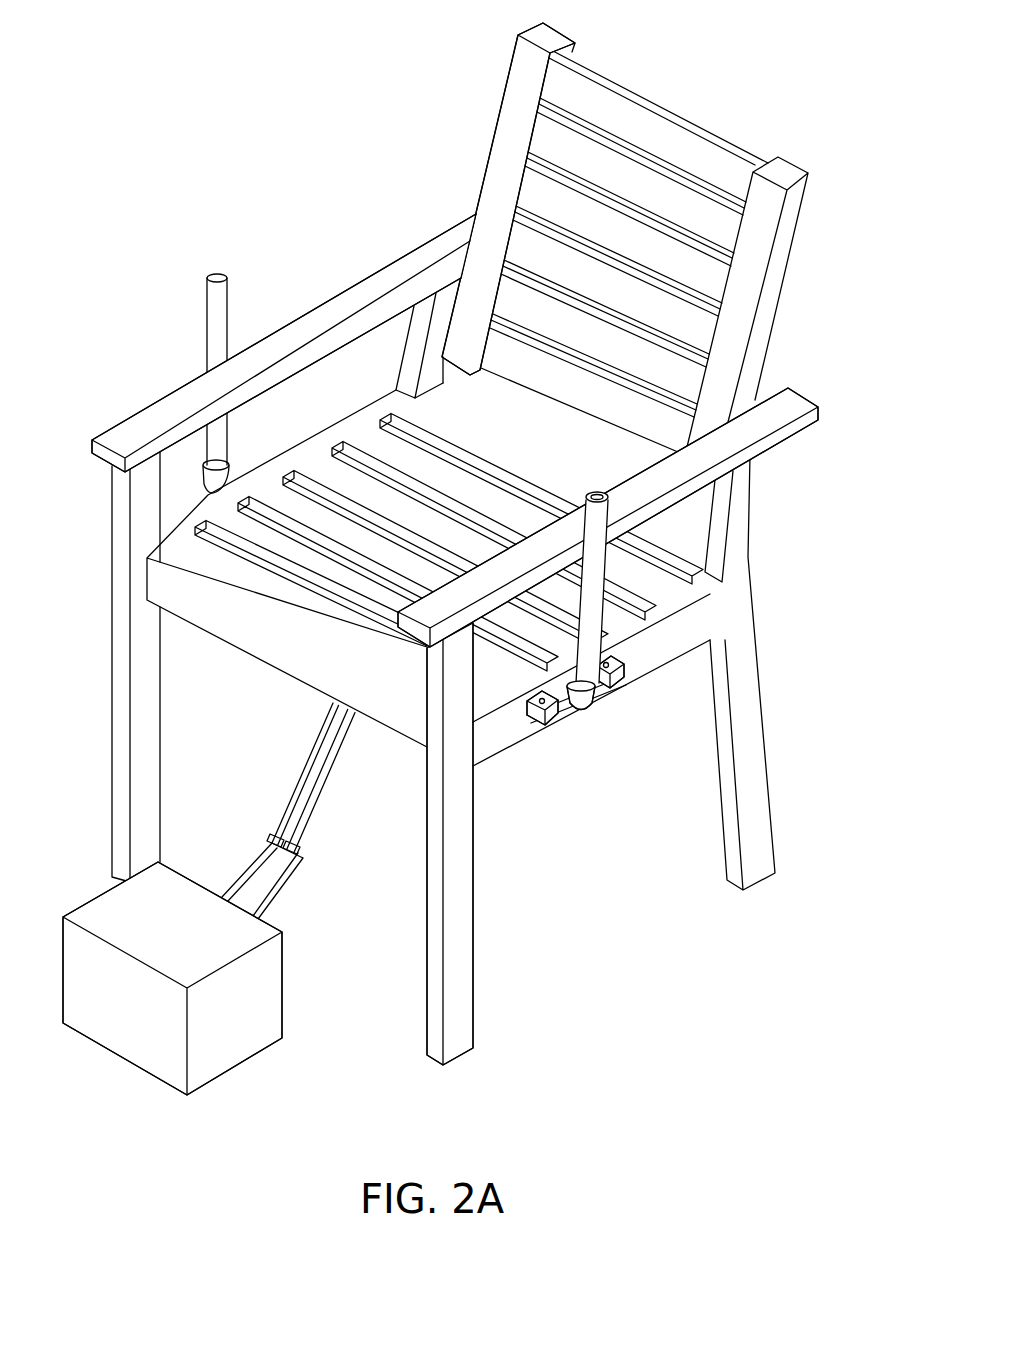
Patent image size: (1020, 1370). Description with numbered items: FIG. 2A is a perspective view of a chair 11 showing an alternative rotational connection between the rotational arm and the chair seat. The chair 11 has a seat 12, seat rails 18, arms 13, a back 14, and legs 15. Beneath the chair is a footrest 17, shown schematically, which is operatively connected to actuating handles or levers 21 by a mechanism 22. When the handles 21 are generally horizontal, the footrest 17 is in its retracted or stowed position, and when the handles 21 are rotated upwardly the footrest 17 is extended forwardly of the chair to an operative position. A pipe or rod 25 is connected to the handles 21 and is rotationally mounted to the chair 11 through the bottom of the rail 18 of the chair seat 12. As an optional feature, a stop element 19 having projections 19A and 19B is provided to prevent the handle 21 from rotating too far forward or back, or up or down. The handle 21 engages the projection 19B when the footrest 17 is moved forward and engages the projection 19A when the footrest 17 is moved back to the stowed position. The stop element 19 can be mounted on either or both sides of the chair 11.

The chair 11 is at (340, 100).
The seat 12 is at (361, 420).
The arms 13 is at (353, 298).
The back 14 is at (551, 136).
The legs 15 is at (115, 753).
The footrest 17 is at (128, 1043).
The seat rail 18 is at (653, 643).
The stop element 19 is at (541, 692).
The projection 19A is at (535, 730).
The projection 19B is at (620, 678).
The actuating handle 21 is at (213, 313).
The mechanism 22 is at (282, 773).
The rod 25 is at (563, 693).